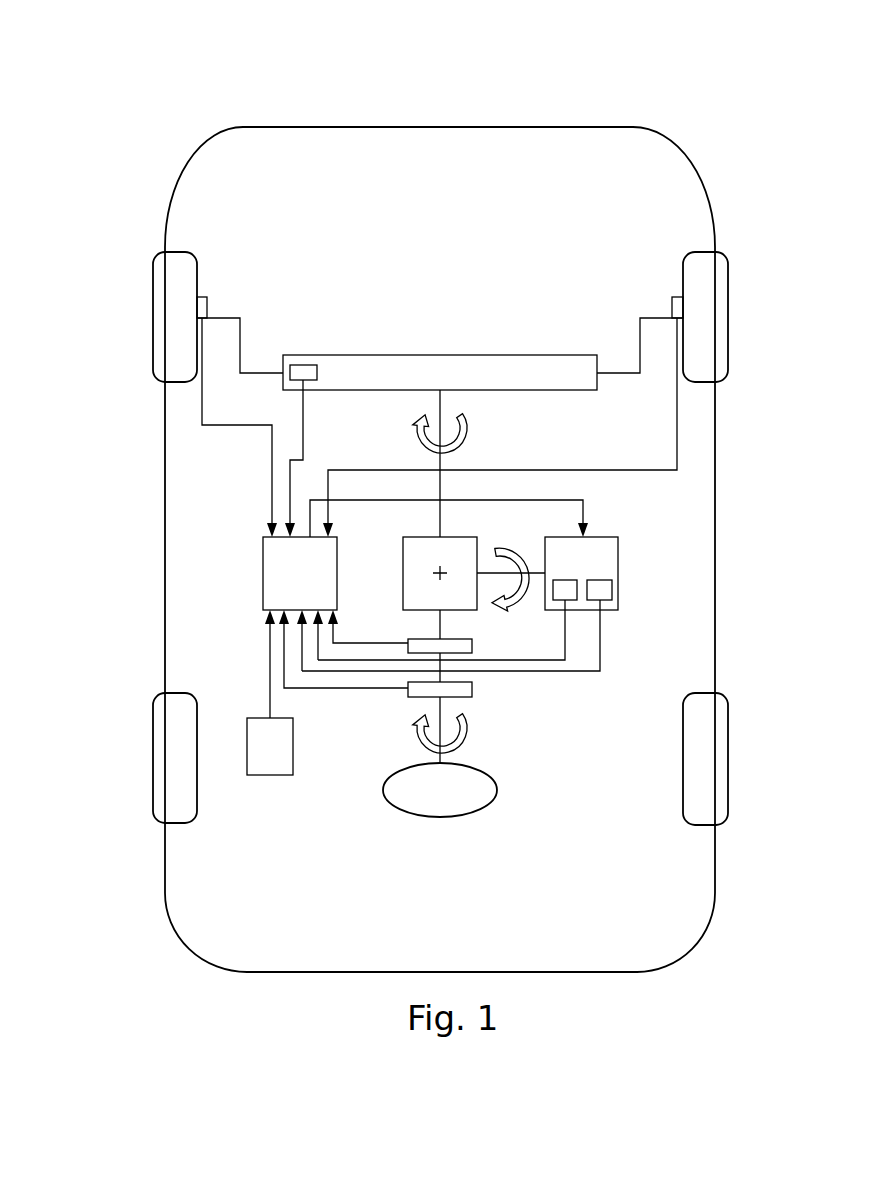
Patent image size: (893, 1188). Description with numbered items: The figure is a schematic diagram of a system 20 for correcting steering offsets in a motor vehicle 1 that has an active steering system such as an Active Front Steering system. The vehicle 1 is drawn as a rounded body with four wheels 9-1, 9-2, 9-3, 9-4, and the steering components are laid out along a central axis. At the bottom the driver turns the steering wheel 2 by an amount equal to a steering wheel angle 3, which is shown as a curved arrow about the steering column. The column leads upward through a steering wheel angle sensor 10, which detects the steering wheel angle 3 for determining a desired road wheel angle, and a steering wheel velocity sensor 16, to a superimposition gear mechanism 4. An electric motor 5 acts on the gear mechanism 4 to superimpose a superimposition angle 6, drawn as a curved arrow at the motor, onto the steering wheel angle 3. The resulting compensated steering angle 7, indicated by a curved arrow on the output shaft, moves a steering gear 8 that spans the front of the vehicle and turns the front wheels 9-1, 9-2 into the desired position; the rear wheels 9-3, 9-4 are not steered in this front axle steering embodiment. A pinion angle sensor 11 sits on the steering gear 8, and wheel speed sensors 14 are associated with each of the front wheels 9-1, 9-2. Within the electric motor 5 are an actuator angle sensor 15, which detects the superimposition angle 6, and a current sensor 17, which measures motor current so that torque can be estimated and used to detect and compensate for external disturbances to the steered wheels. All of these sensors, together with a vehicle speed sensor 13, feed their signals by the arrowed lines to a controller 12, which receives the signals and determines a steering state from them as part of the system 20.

The system for correcting steering offsets 20 is at (115, 70).
The motor vehicle 1 is at (627, 140).
The steering wheel 2 is at (495, 780).
The steering wheel angle 3 is at (468, 732).
The superimposition gear mechanism 4 is at (408, 553).
The electric motor 5 is at (612, 570).
The superimposition angle 6 is at (505, 553).
The compensated steering angle 7 is at (465, 432).
The steering gear 8 is at (497, 355).
The front wheel 9-1 is at (160, 312).
The front wheel 9-2 is at (718, 315).
The wheel 9-3 is at (160, 758).
The wheel 9-4 is at (720, 758).
The steering wheel angle sensor 10 is at (472, 690).
The pinion angle sensor 11 is at (308, 365).
The controller 12 is at (268, 562).
The vehicle speed sensor 13 is at (270, 770).
The wheel speed sensor 14 is at (205, 302).
The actuator angle sensor 15 is at (572, 592).
The steering wheel velocity sensor 16 is at (472, 647).
The current sensor 17 is at (612, 590).